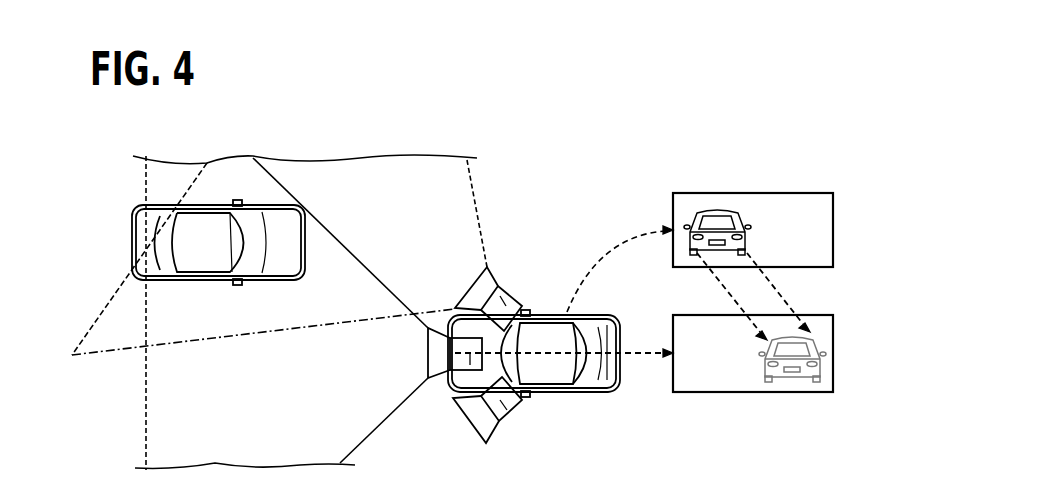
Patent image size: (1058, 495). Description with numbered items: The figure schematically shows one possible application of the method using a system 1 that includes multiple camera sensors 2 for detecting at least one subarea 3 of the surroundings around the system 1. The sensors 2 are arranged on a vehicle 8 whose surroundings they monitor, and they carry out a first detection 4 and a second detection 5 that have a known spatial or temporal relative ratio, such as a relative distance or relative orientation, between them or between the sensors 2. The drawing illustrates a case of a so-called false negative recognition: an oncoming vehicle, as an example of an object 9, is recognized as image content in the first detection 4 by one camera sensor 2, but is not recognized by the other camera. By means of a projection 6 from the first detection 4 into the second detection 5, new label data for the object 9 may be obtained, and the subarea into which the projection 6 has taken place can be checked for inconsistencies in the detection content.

The system 1 is at (556, 203).
The sensor 2 is at (508, 287).
The subarea of the surroundings 3 is at (165, 433).
The first detection 4 is at (788, 193).
The second detection 5 is at (783, 393).
The projection 6 is at (773, 288).
The vehicle 8 is at (627, 378).
The object 9 is at (145, 243).